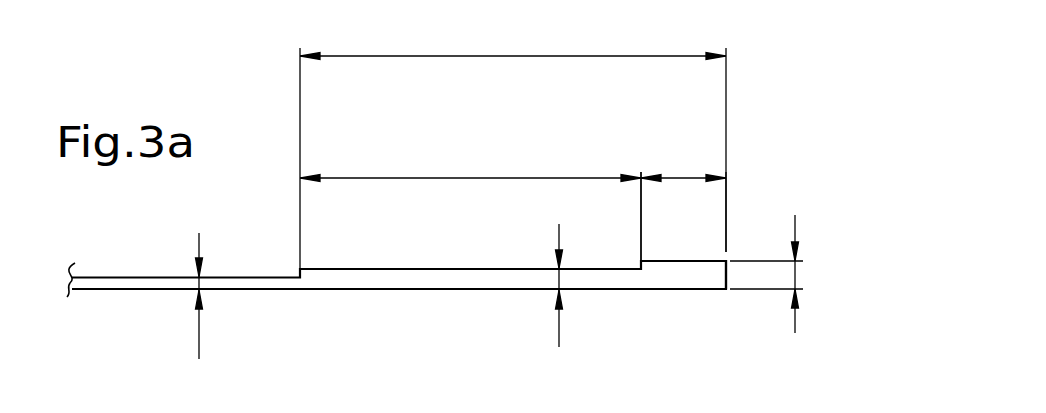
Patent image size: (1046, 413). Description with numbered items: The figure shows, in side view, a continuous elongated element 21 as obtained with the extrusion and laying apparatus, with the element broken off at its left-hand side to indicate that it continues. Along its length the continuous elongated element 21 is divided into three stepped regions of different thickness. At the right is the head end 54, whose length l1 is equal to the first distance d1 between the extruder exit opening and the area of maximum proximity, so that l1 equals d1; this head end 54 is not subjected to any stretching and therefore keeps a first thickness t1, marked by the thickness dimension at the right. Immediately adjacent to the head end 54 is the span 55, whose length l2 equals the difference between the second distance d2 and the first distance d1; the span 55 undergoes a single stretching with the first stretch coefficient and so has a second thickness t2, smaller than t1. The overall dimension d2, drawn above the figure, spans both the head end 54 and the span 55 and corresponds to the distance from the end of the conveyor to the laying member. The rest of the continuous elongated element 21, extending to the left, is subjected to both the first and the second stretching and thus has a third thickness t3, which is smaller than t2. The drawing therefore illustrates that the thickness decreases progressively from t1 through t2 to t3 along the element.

The continuous elongated element 21 is at (355, 289).
The span 55 is at (447, 280).
The head end 54 is at (689, 277).
The second distance d2 is at (557, 55).
The length of the span l2 is at (470, 177).
The length of the head end l1 is at (685, 177).
The first distance d1 is at (680, 91).
The first thickness t1 is at (795, 276).
The second thickness t2 is at (559, 330).
The third thickness t3 is at (199, 333).